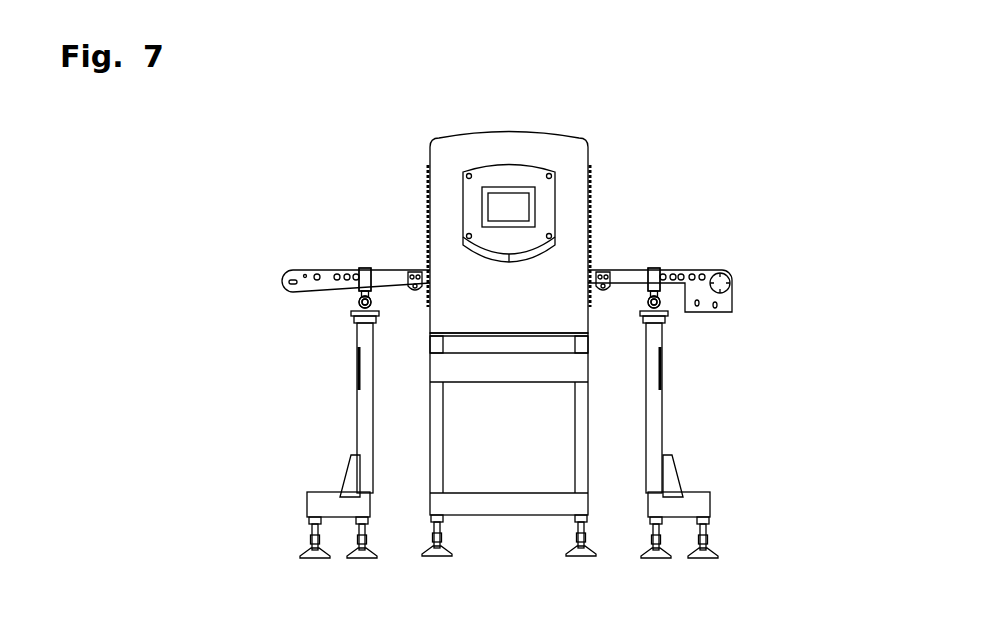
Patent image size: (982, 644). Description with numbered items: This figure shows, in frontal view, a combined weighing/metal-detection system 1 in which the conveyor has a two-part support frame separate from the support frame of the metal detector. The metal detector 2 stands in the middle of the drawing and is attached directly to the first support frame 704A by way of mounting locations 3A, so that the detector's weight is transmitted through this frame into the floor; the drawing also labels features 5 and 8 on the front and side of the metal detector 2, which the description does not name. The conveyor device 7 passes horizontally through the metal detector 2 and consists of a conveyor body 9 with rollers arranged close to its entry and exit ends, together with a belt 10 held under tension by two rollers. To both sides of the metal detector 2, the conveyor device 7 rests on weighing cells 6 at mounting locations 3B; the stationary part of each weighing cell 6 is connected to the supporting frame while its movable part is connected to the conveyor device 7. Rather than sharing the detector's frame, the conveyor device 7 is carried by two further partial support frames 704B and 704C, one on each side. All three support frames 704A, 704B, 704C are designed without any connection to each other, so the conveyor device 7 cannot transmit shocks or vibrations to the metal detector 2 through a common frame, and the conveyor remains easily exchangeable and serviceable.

The combined weighing/metal-detection system 1 is at (768, 117).
The metal detector 2 is at (487, 115).
The display unit 5 is at (518, 163).
The side wall 8 is at (468, 186).
The conveyor body 9 is at (388, 273).
The conveyor device 7 is at (265, 265).
The belt 10 is at (397, 312).
The weighing cell 6 is at (748, 372).
The mounting location 3B is at (465, 380).
The mounting location 3A is at (432, 343).
The first support frame 704A is at (430, 472).
The partial support frame 704B is at (353, 430).
The partial support frame 704C is at (663, 432).